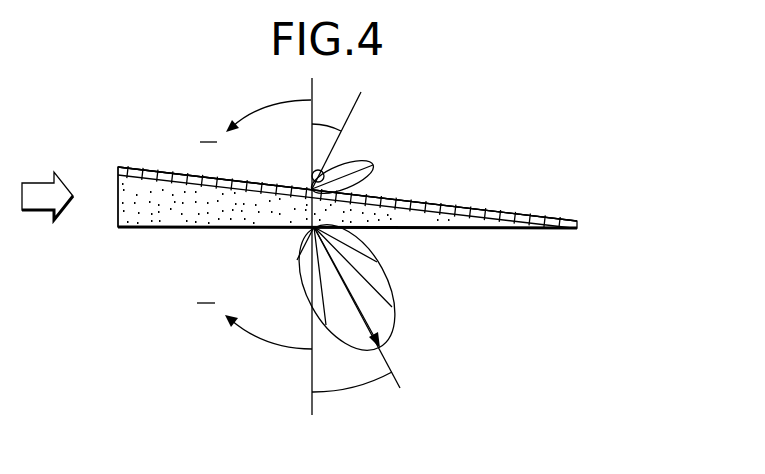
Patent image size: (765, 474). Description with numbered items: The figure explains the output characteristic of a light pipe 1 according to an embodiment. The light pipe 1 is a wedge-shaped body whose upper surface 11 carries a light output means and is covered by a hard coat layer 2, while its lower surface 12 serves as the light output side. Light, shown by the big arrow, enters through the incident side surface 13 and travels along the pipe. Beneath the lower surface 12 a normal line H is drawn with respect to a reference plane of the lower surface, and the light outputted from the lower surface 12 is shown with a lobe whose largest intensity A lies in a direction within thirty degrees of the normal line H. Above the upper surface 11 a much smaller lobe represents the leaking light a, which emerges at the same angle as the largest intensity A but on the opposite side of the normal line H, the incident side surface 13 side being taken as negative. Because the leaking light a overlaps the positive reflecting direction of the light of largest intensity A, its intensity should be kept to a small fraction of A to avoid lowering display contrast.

The light pipe 1 is at (524, 192).
The hard coat layer 2 is at (407, 200).
The upper surface 11 is at (141, 167).
The lower surface 12 is at (150, 228).
The incident side surface 13 is at (118, 208).
The leaking light a is at (313, 176).
The largest intensity A is at (355, 298).
The normal line H is at (310, 376).